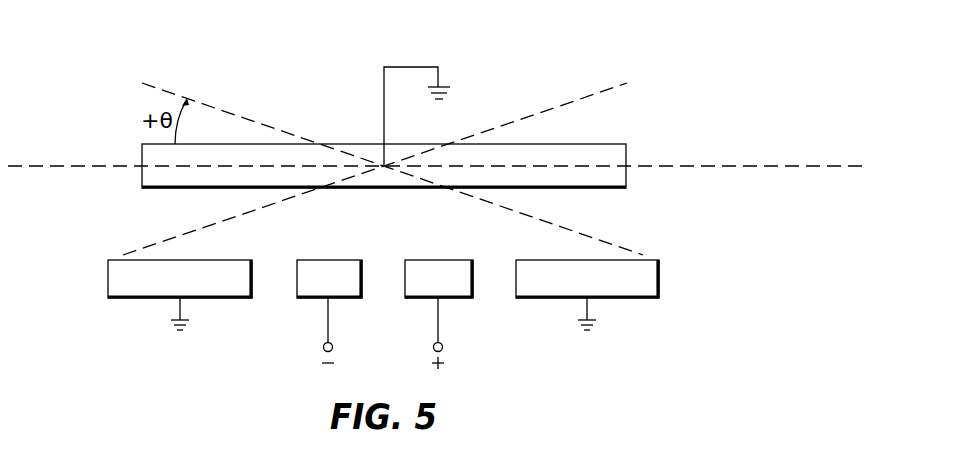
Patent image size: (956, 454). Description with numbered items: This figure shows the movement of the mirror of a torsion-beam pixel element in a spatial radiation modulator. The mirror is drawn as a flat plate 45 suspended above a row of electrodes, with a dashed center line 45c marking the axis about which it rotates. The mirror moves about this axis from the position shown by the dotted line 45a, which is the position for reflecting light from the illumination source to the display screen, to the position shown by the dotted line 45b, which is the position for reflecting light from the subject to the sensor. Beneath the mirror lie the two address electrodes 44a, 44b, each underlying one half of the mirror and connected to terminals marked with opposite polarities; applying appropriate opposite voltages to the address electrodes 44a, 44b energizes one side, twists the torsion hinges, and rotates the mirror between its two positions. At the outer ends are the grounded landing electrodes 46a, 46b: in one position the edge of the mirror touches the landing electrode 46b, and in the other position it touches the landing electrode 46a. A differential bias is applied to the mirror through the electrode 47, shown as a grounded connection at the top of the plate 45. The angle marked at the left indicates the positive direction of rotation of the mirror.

The movable plate 45 is at (820, 167).
The dotted line 45a is at (227, 112).
The dotted line 45b is at (540, 112).
The rotation axis 45c is at (759, 161).
The landing electrode 46a is at (108, 278).
The landing electrode 46b is at (659, 277).
The address electrode 44a is at (323, 349).
The address electrode 44b is at (443, 350).
The electrode 47 is at (412, 67).